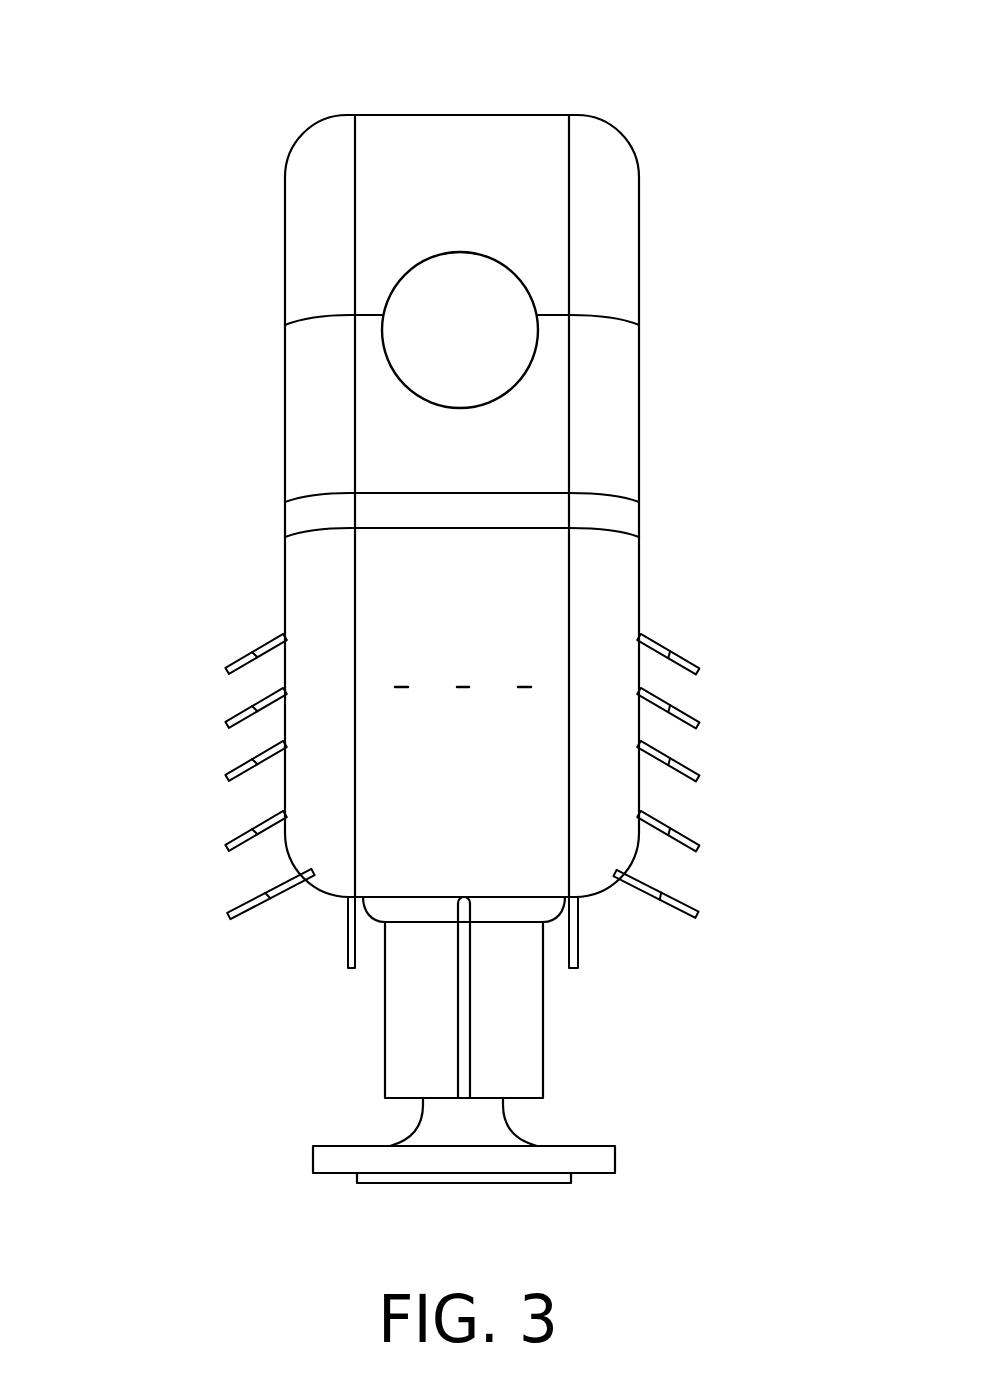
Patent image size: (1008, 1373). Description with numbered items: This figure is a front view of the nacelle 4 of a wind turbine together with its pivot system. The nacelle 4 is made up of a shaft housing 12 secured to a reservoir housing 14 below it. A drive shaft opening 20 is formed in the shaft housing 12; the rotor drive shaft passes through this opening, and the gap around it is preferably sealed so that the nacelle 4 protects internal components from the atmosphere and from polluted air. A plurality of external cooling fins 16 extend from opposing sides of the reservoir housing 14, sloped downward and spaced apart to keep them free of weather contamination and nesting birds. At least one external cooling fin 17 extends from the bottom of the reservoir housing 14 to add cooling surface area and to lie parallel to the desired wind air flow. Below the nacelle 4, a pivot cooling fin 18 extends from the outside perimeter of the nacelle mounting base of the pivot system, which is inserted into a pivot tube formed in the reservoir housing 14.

The nacelle 4 is at (752, 170).
The shaft housing 12 is at (405, 198).
The reservoir housing 14 is at (517, 619).
The external cooling fins 16 is at (700, 663).
The external cooling fin 17 is at (348, 932).
The pivot cooling fin 18 is at (472, 998).
The drive shaft opening 20 is at (428, 337).